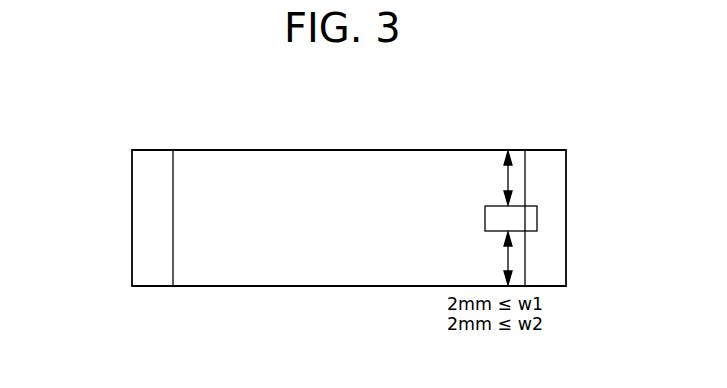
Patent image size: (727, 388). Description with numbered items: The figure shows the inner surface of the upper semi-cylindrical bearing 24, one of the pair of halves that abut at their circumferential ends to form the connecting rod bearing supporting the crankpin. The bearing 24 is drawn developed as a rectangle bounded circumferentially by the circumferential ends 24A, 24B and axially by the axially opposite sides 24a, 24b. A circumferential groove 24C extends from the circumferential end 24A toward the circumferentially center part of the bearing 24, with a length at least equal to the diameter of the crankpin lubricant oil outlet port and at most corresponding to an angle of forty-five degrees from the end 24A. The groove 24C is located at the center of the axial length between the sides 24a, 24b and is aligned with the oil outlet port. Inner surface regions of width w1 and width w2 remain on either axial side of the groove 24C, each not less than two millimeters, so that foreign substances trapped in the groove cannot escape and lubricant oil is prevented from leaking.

The semi-cylindrical bearing 24 is at (302, 165).
The axially opposite side 24a is at (390, 150).
The axially opposite side 24b is at (218, 287).
The circumferential end 24A is at (556, 207).
The circumferential end 24B is at (143, 211).
The circumferential groove 24C is at (486, 220).
The width w1 is at (510, 178).
The width w2 is at (510, 259).